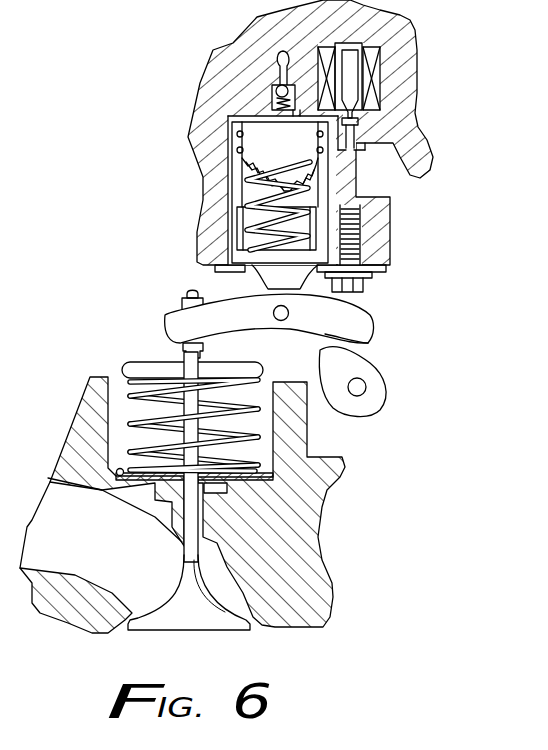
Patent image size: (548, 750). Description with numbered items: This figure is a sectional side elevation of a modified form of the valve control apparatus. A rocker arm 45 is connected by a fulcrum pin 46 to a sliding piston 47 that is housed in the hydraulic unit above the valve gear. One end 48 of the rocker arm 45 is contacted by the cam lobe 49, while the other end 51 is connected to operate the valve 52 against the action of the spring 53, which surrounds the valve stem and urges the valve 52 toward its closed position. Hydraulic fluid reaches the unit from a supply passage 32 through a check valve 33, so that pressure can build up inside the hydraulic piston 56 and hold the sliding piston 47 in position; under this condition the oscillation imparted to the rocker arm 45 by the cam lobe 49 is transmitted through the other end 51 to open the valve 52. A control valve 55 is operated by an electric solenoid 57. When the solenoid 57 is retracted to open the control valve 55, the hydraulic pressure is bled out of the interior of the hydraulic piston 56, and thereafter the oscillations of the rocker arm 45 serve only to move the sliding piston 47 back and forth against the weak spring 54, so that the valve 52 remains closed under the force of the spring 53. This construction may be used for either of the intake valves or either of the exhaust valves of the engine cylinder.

The supply passage 32 is at (282, 58).
The check valve 33 is at (272, 93).
The solenoid 57 is at (351, 78).
The control valve 55 is at (356, 120).
The hydraulic piston 56 is at (262, 178).
The sliding piston 47 is at (243, 225).
The weak spring 54 is at (318, 197).
The other end of rocker arm 51 is at (172, 320).
The fulcrum pin 46 is at (273, 313).
The rocker arm 45 is at (362, 327).
The one end of rocker arm 48 is at (362, 341).
The cam lobe 49 is at (370, 350).
The spring 53 is at (130, 393).
The valve 52 is at (210, 630).